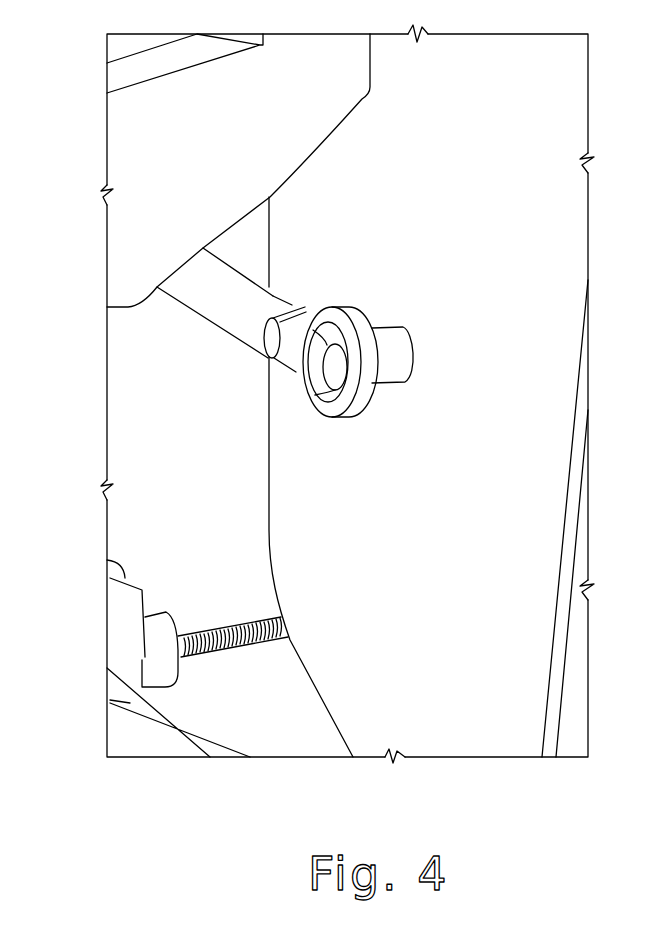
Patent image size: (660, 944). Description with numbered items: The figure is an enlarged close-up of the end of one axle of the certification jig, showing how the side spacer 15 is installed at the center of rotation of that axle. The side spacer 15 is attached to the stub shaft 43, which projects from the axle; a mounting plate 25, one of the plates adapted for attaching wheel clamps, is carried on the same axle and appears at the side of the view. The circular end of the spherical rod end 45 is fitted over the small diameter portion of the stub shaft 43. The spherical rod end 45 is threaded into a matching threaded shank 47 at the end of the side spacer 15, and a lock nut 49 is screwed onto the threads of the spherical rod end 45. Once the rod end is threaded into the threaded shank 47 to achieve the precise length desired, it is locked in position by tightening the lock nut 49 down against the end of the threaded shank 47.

The side spacer 15 is at (172, 300).
The mounting plate 25 is at (580, 520).
The stub shaft 43 is at (408, 345).
The spherical rod end 45 is at (362, 403).
The threaded shank 47 is at (255, 335).
The lock nut 49 is at (265, 362).